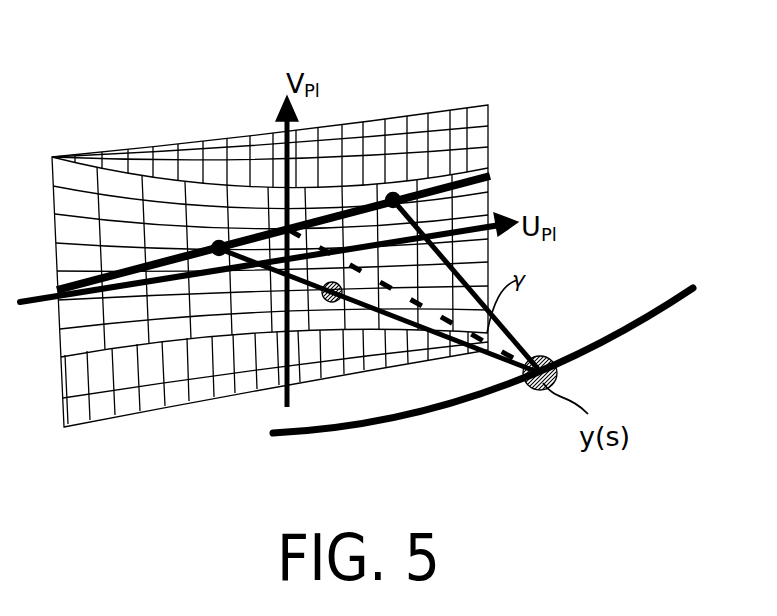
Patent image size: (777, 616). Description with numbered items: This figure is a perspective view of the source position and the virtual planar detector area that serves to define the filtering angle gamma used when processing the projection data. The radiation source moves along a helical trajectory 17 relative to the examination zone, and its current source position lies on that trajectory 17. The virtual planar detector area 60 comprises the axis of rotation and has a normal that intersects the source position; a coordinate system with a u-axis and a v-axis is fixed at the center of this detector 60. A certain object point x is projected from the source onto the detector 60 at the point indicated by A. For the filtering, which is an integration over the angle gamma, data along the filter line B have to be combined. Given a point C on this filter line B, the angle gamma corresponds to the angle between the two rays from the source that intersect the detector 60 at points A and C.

The virtual planar detector area 60 is at (413, 110).
The helical trajectory 17 is at (653, 328).
The projection point A is at (215, 229).
The filter line B is at (285, 227).
The point C on the filter line C is at (412, 211).
The object point x is at (332, 297).